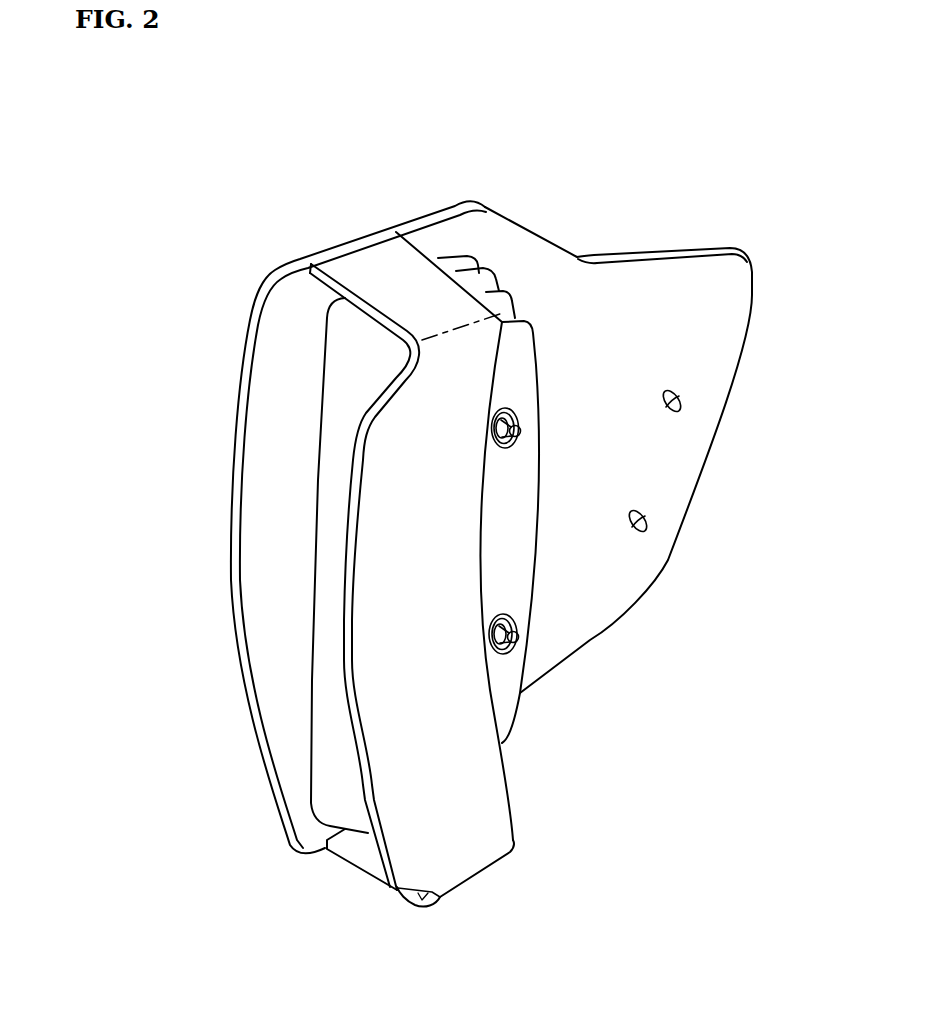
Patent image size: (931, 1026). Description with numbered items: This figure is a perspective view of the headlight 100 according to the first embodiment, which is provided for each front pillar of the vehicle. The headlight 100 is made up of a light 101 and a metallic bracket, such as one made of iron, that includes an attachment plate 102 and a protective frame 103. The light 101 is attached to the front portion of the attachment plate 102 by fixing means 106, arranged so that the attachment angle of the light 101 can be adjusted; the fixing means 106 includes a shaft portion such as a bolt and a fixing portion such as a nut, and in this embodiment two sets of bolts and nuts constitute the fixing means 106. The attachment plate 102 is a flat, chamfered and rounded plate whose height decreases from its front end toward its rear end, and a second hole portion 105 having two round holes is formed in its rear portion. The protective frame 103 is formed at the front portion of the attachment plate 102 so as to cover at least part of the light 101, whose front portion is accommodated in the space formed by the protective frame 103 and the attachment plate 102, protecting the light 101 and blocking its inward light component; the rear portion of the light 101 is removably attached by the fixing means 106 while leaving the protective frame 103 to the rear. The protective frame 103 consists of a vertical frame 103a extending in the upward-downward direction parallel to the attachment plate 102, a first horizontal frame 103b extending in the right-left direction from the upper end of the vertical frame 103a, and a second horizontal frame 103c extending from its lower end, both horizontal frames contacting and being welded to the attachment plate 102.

The headlight 100 is at (491, 121).
The light 101 is at (362, 362).
The attachment plate 102 is at (647, 293).
The protective frame 103 is at (452, 586).
The vertical frame 103a is at (460, 790).
The first horizontal frame 103b is at (382, 275).
The second horizontal frame 103c is at (357, 843).
The second hole portion 105 is at (679, 404).
The fixing means 106 is at (519, 433).